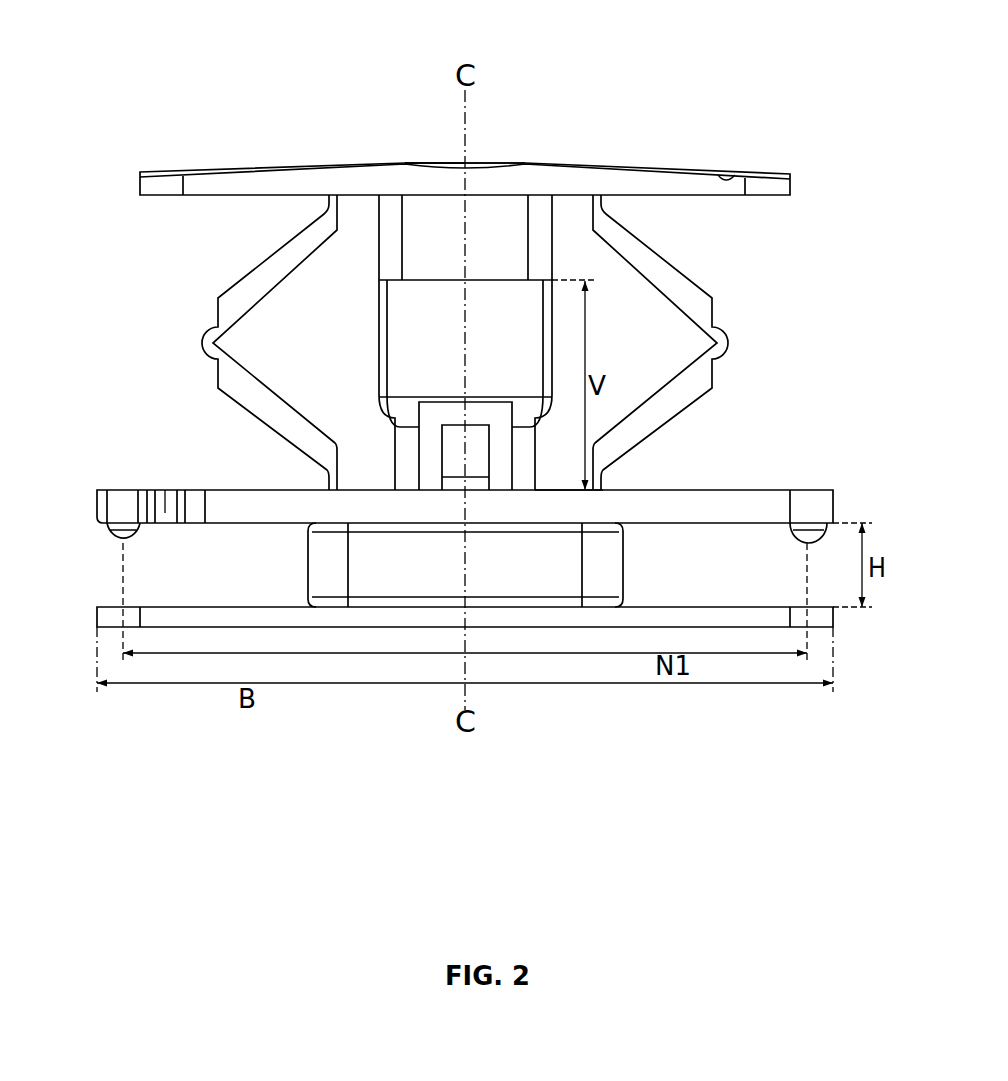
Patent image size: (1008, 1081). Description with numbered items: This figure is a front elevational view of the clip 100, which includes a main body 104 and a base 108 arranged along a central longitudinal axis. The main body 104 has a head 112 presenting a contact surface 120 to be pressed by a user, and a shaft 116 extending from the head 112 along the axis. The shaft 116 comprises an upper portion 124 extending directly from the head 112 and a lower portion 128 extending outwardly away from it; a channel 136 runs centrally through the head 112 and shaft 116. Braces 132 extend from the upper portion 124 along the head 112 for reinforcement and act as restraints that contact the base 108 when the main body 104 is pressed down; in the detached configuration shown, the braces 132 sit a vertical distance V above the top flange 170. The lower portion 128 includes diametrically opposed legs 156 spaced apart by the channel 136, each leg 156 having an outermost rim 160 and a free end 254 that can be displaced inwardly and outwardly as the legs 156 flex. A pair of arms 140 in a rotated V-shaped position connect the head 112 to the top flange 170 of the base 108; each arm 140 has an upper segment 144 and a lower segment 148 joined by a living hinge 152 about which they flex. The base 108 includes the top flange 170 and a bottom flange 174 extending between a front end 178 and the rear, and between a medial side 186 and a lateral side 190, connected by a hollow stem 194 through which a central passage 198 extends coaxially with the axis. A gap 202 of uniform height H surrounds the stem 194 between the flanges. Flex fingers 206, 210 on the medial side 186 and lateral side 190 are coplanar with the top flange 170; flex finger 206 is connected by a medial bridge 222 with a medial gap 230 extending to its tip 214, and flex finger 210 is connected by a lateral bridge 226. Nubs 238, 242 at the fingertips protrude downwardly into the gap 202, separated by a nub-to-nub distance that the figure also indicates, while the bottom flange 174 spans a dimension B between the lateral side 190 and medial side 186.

The clip 100 is at (162, 38).
The main body 104 is at (253, 168).
The base 108 is at (833, 615).
The head 112 is at (735, 172).
The shaft 116 is at (420, 223).
The contact surface 120 is at (650, 165).
The upper portion 124 is at (415, 325).
The lower portion 128 is at (395, 470).
The braces 132 is at (392, 250).
The channel 136 is at (428, 155).
The arms 140 is at (217, 388).
The upper segment 144 is at (248, 284).
The lower segment 148 is at (275, 417).
The hinge 152 is at (210, 343).
The legs 156 is at (477, 443).
The rim 160 is at (455, 483).
The top flange 170 is at (285, 498).
The bottom flange 174 is at (108, 613).
The front end 178 is at (630, 505).
The medial side 186 is at (97, 617).
The lateral side 190 is at (832, 617).
The hollow stem 194 is at (570, 548).
The central passage 198 is at (545, 486).
The gap 202 is at (466, 559).
The flex finger 206 is at (118, 495).
The flex finger 210 is at (830, 490).
The tip 214 is at (120, 490).
The medial bridge 222 is at (165, 523).
The lateral bridge 226 is at (778, 498).
The medial gap 230 is at (164, 482).
The nub 238 is at (113, 525).
The nub 242 is at (790, 530).
The free end 254 is at (453, 427).